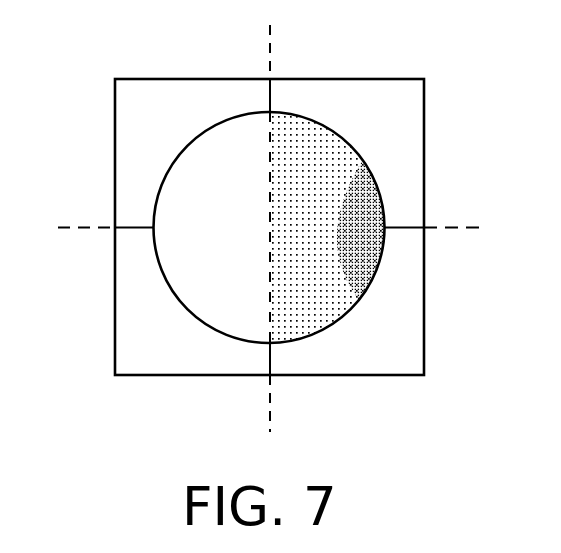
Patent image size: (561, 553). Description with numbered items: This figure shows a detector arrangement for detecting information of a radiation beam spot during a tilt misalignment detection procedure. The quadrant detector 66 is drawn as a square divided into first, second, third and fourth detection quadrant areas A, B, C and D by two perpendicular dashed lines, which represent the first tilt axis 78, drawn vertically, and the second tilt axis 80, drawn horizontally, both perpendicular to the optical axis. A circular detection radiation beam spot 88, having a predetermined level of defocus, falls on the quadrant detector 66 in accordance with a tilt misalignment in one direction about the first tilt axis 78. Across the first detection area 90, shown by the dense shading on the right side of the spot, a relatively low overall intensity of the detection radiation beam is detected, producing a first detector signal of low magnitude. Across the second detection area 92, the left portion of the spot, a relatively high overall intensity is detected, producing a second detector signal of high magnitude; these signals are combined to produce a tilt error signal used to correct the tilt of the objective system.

The quadrant detector 66 is at (335, 79).
The first tilt axis 78 is at (270, 52).
The second tilt axis 80 is at (65, 227).
The detection radiation beam spot 88 is at (382, 260).
The first detection area 90 is at (360, 207).
The second detection area 92 is at (193, 277).